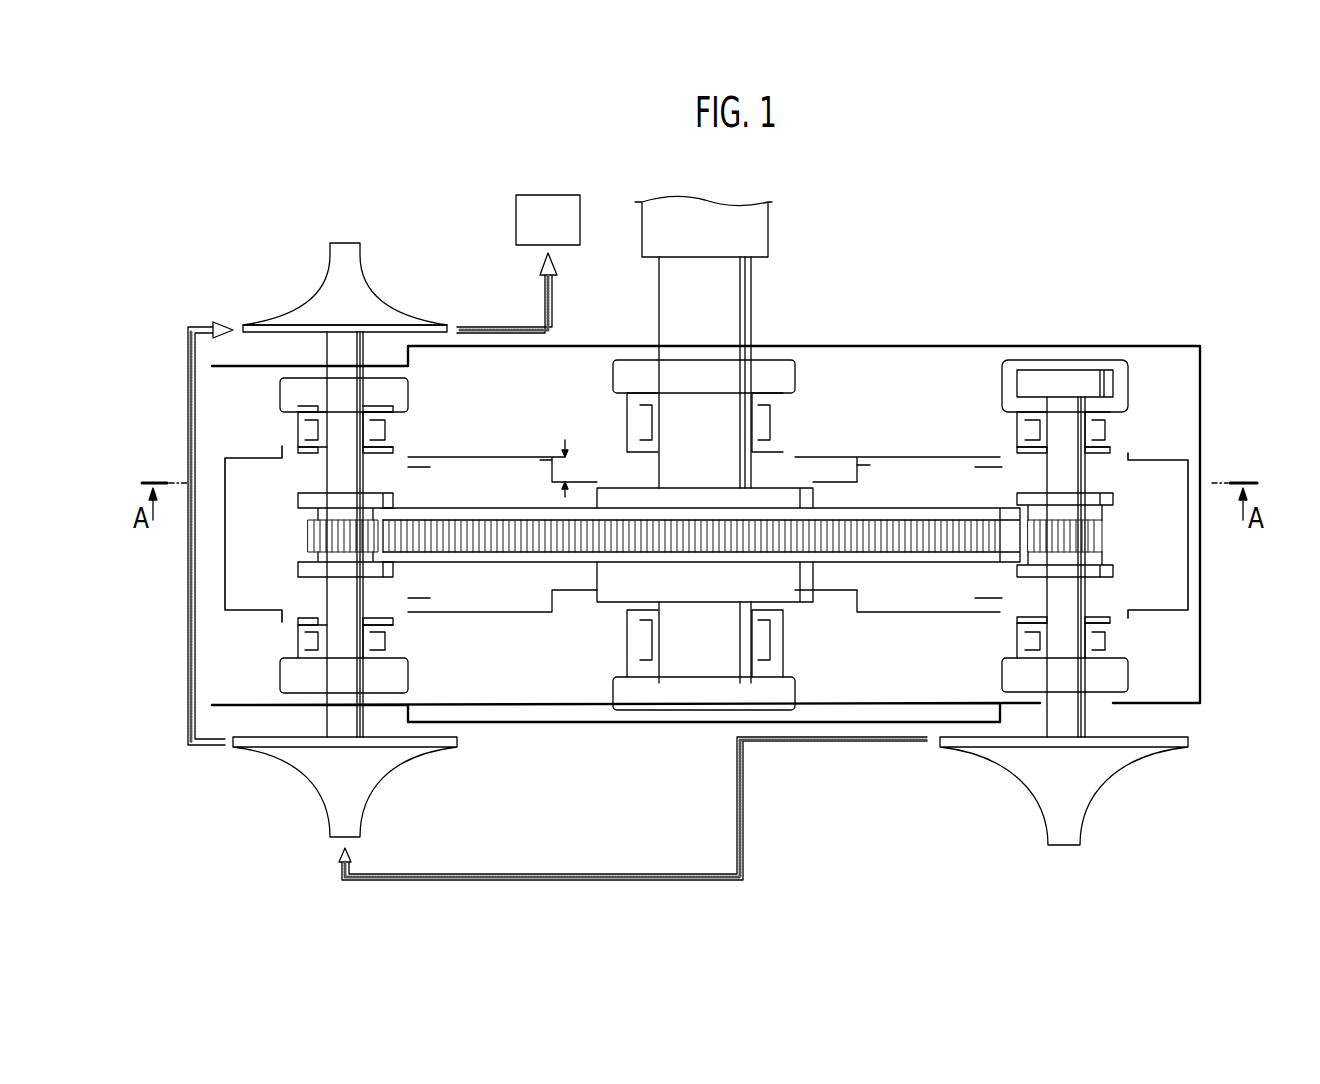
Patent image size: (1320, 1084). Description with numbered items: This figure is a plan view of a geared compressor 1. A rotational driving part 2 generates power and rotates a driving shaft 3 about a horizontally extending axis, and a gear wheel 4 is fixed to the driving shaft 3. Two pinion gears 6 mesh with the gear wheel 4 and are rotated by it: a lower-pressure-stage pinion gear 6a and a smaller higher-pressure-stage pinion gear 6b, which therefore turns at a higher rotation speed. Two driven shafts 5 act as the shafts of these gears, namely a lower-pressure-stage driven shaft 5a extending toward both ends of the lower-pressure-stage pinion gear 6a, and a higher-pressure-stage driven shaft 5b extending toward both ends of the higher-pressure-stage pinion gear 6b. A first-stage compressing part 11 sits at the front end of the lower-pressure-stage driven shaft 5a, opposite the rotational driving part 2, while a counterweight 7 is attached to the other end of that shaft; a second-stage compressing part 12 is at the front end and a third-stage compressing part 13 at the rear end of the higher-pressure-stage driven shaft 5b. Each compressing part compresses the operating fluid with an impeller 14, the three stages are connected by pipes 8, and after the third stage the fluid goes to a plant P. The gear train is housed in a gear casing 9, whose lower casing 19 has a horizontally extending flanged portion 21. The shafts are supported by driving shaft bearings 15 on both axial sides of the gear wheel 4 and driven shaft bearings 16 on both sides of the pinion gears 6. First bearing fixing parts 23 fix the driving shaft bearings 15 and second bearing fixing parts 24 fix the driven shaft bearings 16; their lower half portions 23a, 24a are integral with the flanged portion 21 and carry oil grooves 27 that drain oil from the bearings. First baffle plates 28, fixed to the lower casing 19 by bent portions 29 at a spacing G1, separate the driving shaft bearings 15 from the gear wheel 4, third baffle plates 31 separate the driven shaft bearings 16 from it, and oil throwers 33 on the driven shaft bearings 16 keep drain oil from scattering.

The geared compressor 1 is at (1185, 228).
The rotational driving part 2 is at (758, 232).
The driving shaft 3 is at (728, 298).
The gear wheel 4 is at (915, 525).
The driven shafts 5 is at (791, 565).
The lower-pressure-stage driven shaft 5a is at (1070, 597).
The higher-pressure-stage driven shaft 5b is at (345, 725).
The pinion gears 6 is at (763, 540).
The lower-pressure-stage pinion gear 6a is at (1085, 537).
The higher-pressure-stage pinion gear 6b is at (325, 540).
The counterweight 7 is at (1062, 378).
The pipes 8 is at (556, 283).
The gear casing 9 is at (747, 512).
The first-stage compressing part 11 is at (1088, 790).
The second-stage compressing part 12 is at (360, 800).
The third-stage compressing part 13 is at (372, 292).
The impeller 14 is at (717, 544).
The driving shaft bearings 15 is at (785, 397).
The driven shaft bearings 16 is at (376, 420).
The lower casing 19 is at (747, 512).
The flanged portion 21 is at (1185, 405).
The first bearing fixing parts 23 is at (704, 712).
The bearing fixing part lower half portion 23a is at (815, 612).
The second bearing fixing parts 24 is at (287, 357).
The bearing fixing part lower half portion 24a is at (280, 428).
The oil grooves 27 is at (615, 352).
The first baffle plates 28 is at (835, 470).
The bent portions 29 is at (565, 600).
The third baffle plates 31 is at (990, 460).
The oil throwers 33 is at (1115, 452).
The plant P is at (548, 193).
The predetermined dimension G1 is at (552, 470).